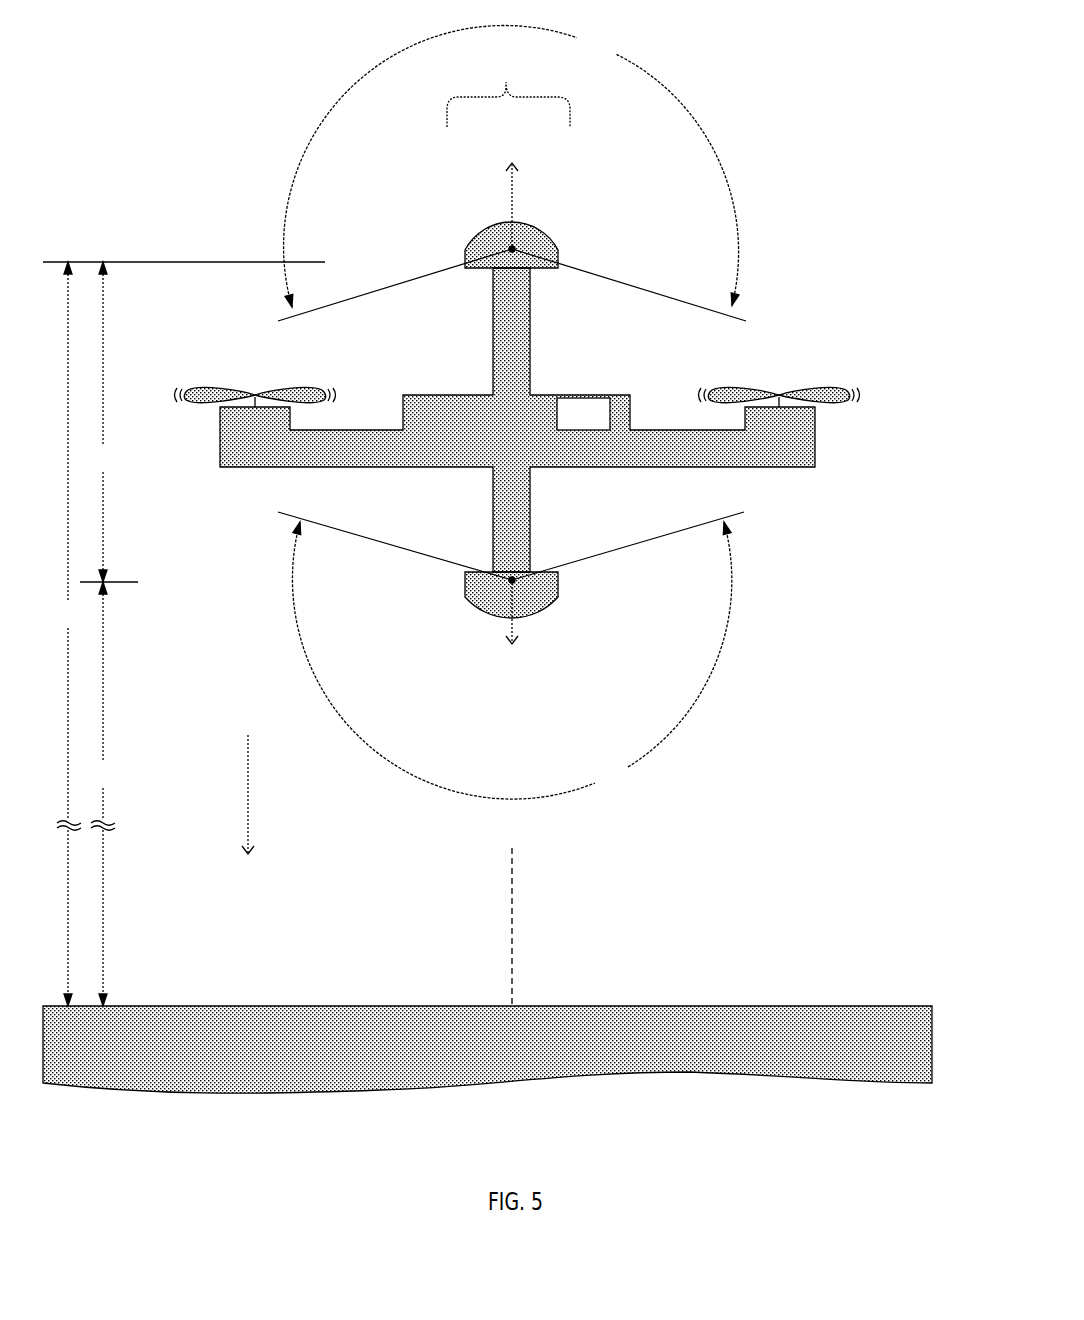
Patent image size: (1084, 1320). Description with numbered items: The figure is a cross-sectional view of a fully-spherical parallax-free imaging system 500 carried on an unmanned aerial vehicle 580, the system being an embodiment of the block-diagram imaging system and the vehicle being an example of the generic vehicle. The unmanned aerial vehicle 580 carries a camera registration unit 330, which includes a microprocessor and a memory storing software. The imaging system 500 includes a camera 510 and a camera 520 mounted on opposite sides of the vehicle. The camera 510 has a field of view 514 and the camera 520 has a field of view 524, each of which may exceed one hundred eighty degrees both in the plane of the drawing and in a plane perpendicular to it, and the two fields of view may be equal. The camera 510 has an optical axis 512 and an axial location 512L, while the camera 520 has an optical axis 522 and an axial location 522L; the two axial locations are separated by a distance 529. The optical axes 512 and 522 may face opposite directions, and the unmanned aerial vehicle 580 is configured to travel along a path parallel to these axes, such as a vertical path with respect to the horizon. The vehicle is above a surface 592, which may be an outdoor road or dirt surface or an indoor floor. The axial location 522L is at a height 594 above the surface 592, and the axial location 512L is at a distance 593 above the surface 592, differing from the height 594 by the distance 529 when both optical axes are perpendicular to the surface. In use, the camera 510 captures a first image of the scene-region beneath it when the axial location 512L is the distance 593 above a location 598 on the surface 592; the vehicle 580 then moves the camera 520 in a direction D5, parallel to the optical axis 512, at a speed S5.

The fully-spherical parallax-free imaging system 500 is at (508, 87).
The field of view 524 is at (511, 166).
The camera 520 is at (490, 222).
The optical axis 522 is at (513, 207).
The axial location 522L is at (512, 249).
The camera registration unit 330 is at (600, 426).
The unmanned aerial vehicle 580 is at (643, 456).
The distance 529 is at (92, 422).
The height 594 is at (67, 634).
The distance 593 is at (103, 794).
The axial location 512L is at (513, 572).
The camera 510 is at (488, 612).
The optical axis 512 is at (523, 633).
The field of view 514 is at (511, 660).
The location 598 is at (516, 901).
The surface 592 is at (840, 998).
The direction D5 is at (216, 794).
The speed S5 is at (247, 785).